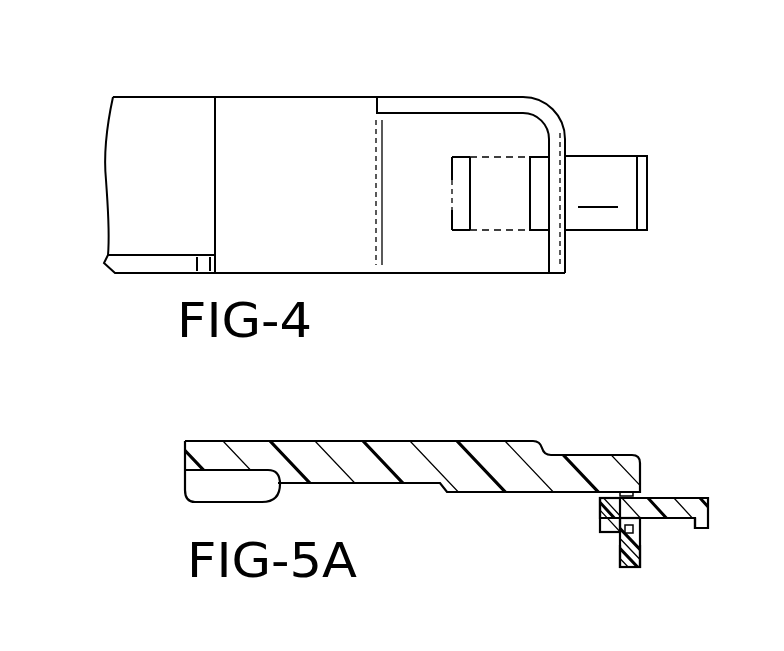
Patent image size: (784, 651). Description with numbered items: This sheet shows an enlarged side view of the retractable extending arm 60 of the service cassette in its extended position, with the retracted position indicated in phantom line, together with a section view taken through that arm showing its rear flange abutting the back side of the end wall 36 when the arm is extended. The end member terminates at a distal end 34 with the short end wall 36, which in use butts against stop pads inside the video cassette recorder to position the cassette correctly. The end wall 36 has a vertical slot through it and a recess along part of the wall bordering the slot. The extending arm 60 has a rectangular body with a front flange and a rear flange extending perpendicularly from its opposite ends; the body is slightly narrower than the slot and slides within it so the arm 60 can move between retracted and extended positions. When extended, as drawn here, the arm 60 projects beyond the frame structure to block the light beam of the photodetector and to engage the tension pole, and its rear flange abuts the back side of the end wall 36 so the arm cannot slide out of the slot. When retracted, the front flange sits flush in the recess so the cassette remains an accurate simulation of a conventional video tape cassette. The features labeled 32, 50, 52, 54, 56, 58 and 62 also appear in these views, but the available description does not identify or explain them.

In FIG. 4, the housing body 32 is at (392, 90).
In FIG. 4, the distal end 34 is at (568, 265).
In FIG. 5A, the distal end 34 is at (647, 540).
In FIG. 4, the end wall 36 is at (427, 97).
In FIG. 4, the latch assembly 50 is at (600, 153).
In FIG. 5A, the latch assembly 50 is at (685, 495).
In FIG. 5A, the end portion of housing strip 52 is at (652, 493).
In FIG. 4, the vertical latch member 54 is at (565, 178).
In FIG. 5A, the vertical latch member 54 is at (650, 555).
In FIG. 4, the latch bar 56 is at (599, 188).
In FIG. 5A, the latch bar 56 is at (677, 520).
In FIG. 4, the latch lip 58 is at (643, 198).
In FIG. 5A, the latch lip 58 is at (707, 528).
In FIG. 4, the extending arm 60 is at (537, 222).
In FIG. 5A, the extending arm 60 is at (600, 533).
In FIG. 4, the notch / slot 62 is at (547, 255).
In FIG. 5A, the notch / slot 62 is at (622, 553).